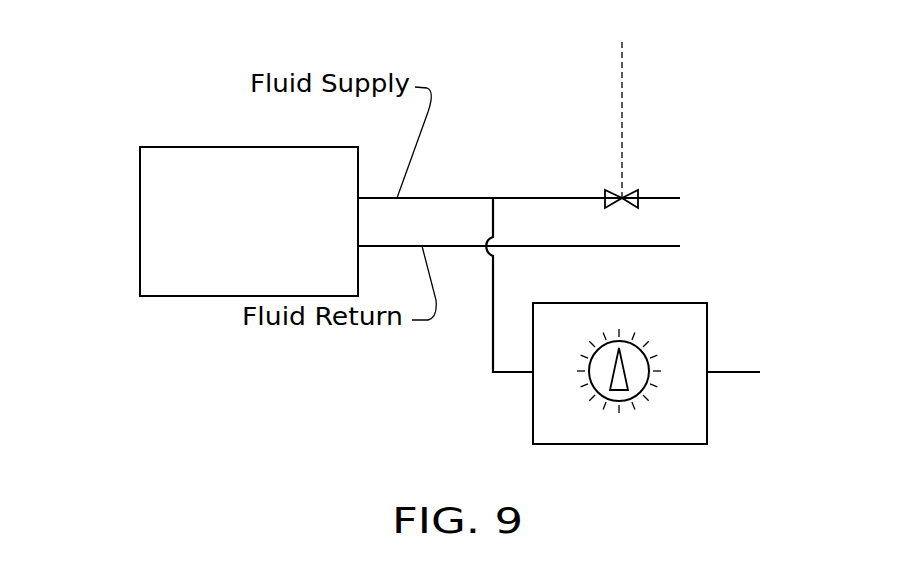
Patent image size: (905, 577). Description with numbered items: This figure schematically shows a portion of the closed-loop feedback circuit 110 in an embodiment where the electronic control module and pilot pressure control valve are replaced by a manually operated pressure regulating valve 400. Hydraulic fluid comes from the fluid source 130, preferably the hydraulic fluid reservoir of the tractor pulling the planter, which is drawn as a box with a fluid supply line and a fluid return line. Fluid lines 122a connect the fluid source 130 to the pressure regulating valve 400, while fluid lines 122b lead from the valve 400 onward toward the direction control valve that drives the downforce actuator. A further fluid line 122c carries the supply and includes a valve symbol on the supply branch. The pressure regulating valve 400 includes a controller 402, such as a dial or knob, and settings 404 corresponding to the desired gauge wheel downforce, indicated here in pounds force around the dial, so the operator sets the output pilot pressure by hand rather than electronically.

The closed-loop feedback circuit 110 is at (160, 83).
The fluid source 130 is at (270, 234).
The fluid lines 122a is at (493, 310).
The fluid lines 122b is at (740, 372).
The fluid supply line with valve 122c is at (577, 198).
The manually operated pressure regulating valve 400 is at (532, 415).
The controller 402 is at (633, 387).
The settings 404 is at (567, 393).